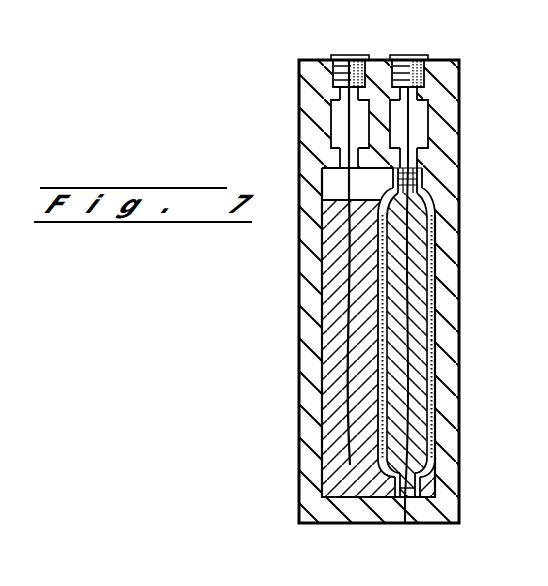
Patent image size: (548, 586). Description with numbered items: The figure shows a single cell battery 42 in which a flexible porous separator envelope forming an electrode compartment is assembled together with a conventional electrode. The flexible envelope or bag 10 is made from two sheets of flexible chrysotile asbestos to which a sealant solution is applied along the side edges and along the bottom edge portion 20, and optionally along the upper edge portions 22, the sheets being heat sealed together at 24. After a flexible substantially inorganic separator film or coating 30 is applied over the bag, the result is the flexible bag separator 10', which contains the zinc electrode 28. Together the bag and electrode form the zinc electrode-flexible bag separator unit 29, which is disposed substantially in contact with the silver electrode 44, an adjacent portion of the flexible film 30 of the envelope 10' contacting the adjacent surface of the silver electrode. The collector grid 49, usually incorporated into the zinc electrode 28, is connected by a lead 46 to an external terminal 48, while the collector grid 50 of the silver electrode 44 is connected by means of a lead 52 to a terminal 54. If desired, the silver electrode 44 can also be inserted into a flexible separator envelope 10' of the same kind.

The terminal 54 is at (350, 57).
The external terminal 48 is at (425, 57).
The lead 52 is at (336, 123).
The lead 46 is at (413, 129).
The upper edge portions 22 is at (422, 170).
The heat seal 24 is at (423, 191).
The zinc electrode-flexible bag separator unit 29 is at (437, 251).
The flexible envelope or bag 10 is at (434, 277).
The battery 42 is at (482, 299).
The flexible bag separator 10' is at (452, 386).
The collector grid 50 is at (325, 352).
The flexible substantially inorganic separator film or coating 30 is at (434, 380).
The silver electrode 44 is at (322, 401).
The zinc electrode 28 is at (417, 414).
The collector grid 49 is at (413, 447).
The bottom edge portion 20 is at (430, 491).